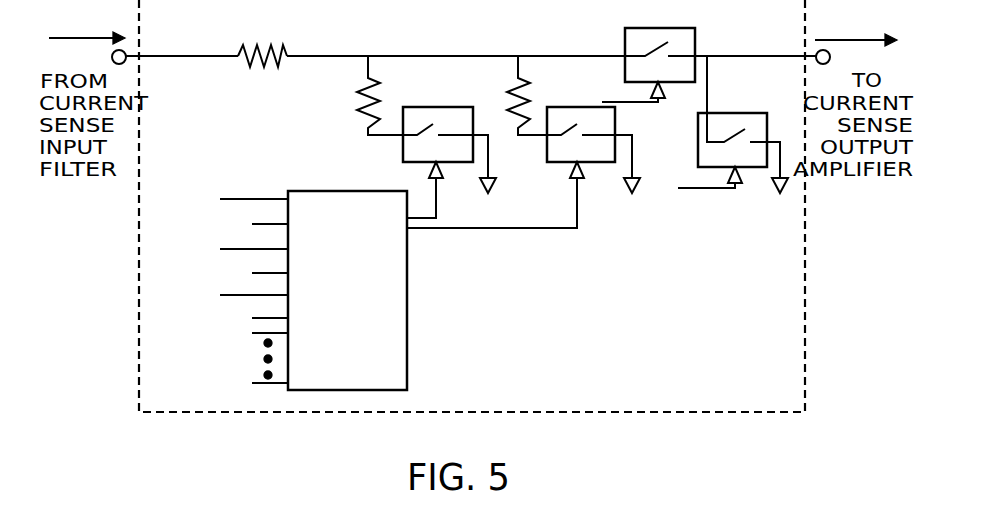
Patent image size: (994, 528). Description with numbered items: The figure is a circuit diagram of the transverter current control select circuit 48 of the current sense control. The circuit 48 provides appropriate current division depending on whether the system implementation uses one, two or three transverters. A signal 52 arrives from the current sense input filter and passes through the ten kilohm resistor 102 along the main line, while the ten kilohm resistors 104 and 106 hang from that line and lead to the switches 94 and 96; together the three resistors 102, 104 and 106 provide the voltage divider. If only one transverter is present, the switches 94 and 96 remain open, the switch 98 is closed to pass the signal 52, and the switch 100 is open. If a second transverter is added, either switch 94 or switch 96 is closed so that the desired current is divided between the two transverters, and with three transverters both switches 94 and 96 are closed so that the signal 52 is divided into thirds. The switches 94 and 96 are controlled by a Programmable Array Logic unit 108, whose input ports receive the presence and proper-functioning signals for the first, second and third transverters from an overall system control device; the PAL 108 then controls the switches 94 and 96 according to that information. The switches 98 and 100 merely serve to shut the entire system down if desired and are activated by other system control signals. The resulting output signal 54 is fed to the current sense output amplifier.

The transverter current control select circuit 48 is at (808, 365).
The signal 52 is at (111, 36).
The output signal 54 is at (857, 38).
The switch 94 is at (432, 107).
The switch 96 is at (590, 107).
The switch 98 is at (667, 27).
The switch 100 is at (728, 110).
The resistor 102 is at (277, 50).
The resistor 104 is at (363, 92).
The resistor 106 is at (505, 102).
The Programmable Array Logic unit 108 is at (407, 285).